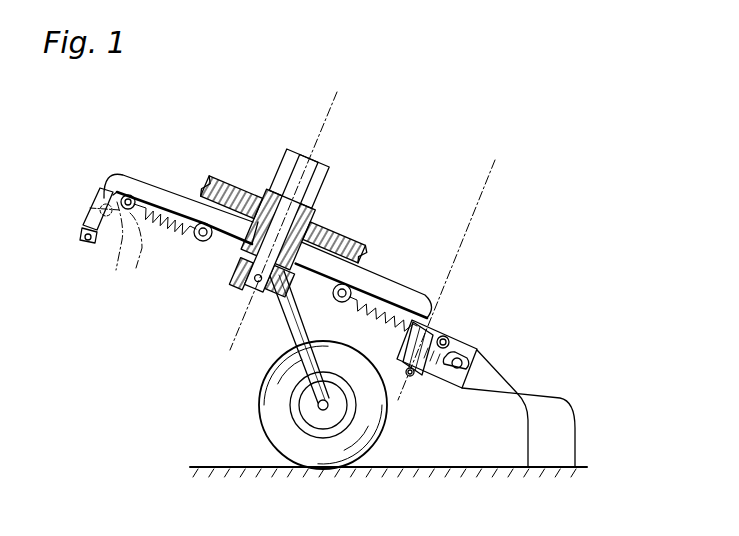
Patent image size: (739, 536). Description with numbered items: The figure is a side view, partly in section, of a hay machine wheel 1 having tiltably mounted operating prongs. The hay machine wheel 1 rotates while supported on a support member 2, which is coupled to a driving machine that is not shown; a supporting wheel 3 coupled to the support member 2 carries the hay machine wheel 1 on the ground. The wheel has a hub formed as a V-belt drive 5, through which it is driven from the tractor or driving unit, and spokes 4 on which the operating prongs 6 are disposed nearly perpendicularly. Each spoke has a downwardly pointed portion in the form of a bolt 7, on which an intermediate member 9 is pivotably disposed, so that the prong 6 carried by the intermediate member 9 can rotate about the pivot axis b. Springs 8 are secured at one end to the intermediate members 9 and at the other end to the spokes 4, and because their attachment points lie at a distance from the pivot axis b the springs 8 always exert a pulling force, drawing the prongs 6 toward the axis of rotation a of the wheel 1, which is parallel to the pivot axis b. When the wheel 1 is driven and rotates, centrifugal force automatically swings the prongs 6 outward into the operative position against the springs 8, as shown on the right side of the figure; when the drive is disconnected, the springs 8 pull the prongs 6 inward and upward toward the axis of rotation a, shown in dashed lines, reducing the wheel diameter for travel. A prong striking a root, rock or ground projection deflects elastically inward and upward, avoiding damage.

The hay machine wheel 1 is at (536, 227).
The support member 2 is at (324, 162).
The supporting wheel 3 is at (260, 389).
The spokes 4 is at (378, 288).
The V-belt drive 5 is at (342, 234).
The operating prongs 6 is at (538, 420).
The bolt 7 is at (471, 354).
The springs 8 is at (441, 336).
The intermediate members 9 is at (464, 359).
The axis of rotation a is at (346, 94).
The pivot axis b is at (500, 157).